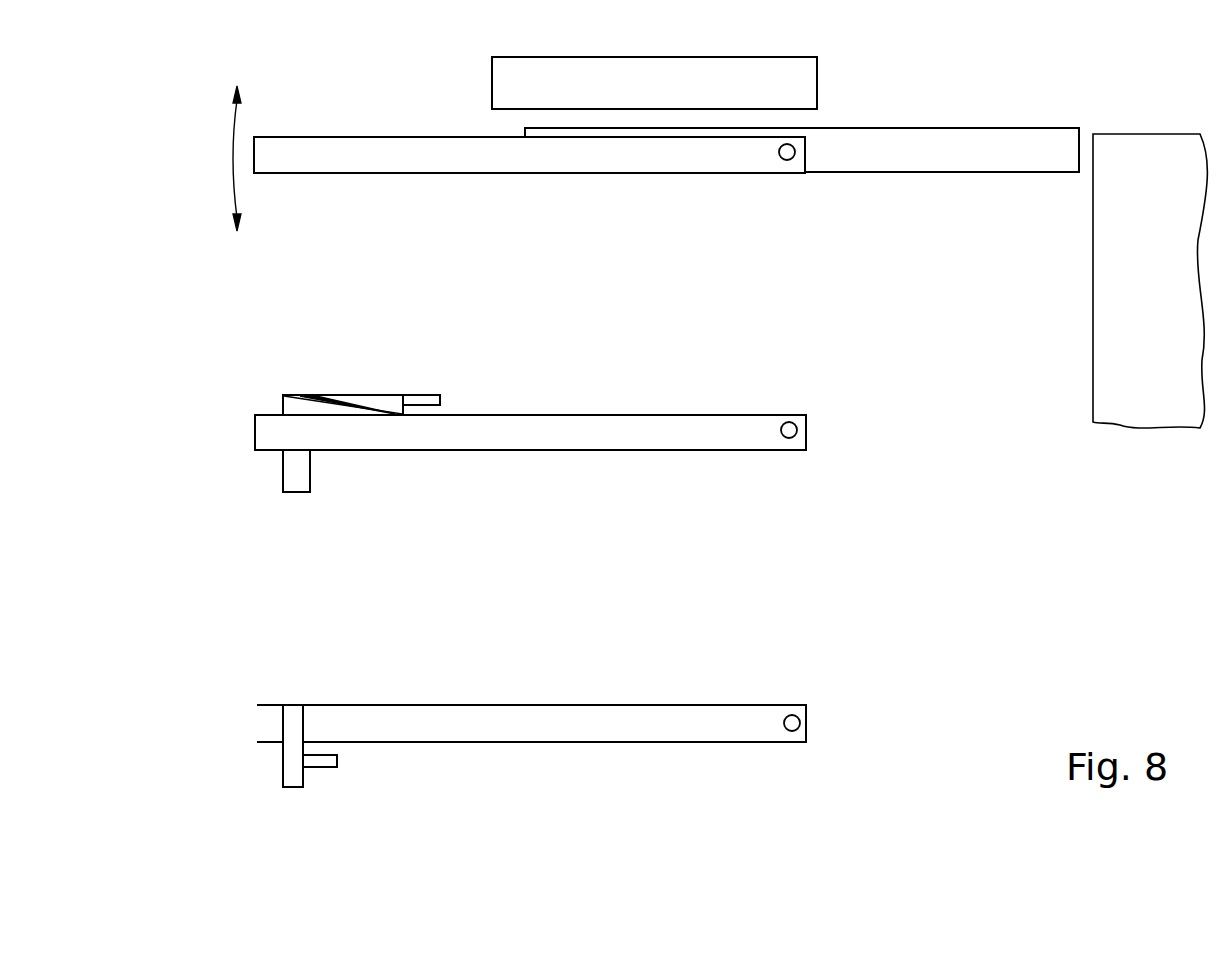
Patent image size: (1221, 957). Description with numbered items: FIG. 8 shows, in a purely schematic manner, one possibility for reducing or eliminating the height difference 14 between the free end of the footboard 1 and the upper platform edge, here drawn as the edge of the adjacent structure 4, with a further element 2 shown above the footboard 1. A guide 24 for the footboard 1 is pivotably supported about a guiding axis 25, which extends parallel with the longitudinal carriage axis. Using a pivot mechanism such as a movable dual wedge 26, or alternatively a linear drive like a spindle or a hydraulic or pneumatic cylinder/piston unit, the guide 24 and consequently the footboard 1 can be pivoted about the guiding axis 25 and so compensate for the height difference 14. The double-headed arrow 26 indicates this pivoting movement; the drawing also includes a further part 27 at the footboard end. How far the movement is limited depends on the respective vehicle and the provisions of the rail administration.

The footboard 1 is at (910, 150).
The counterpart element 2 is at (778, 83).
The housing wall 4 is at (1157, 235).
The height difference 14 is at (1098, 118).
The guide 24 is at (587, 158).
The guiding axis 25 is at (782, 163).
The dual wedge 26 is at (230, 156).
The stop 27 is at (295, 760).